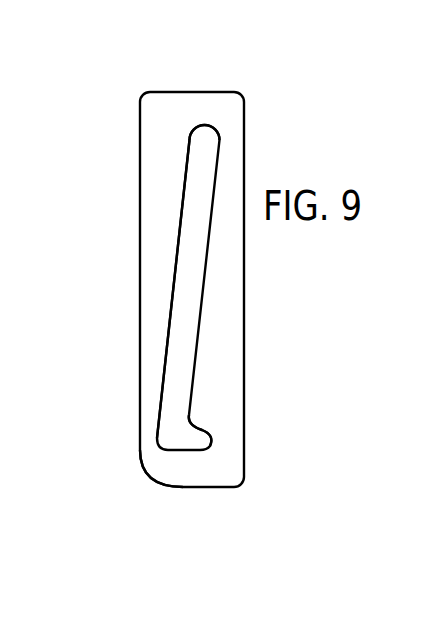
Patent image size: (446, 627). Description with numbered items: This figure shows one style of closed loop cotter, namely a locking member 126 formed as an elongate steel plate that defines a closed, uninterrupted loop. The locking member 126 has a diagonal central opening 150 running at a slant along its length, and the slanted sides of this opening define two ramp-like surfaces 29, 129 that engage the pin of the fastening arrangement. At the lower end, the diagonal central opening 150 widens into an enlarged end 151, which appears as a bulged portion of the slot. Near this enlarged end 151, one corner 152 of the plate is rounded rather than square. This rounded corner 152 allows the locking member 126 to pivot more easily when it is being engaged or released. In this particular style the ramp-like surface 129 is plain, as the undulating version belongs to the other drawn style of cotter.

The locking member 126 is at (180, 100).
The ramp-like surface 29 is at (187, 165).
The ramp-like surface 129 is at (208, 227).
The diagonal central opening 150 is at (185, 327).
The enlarged end 151 is at (193, 432).
The rounded corner 152 is at (153, 473).